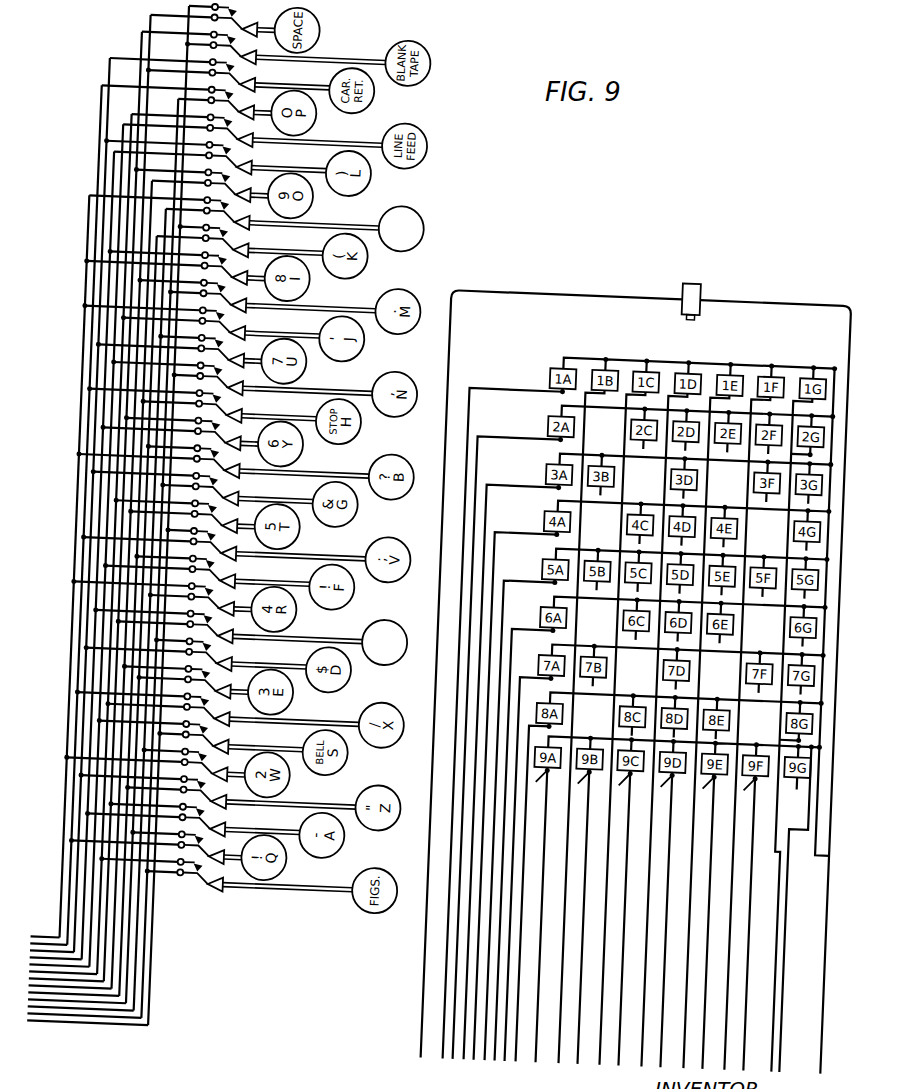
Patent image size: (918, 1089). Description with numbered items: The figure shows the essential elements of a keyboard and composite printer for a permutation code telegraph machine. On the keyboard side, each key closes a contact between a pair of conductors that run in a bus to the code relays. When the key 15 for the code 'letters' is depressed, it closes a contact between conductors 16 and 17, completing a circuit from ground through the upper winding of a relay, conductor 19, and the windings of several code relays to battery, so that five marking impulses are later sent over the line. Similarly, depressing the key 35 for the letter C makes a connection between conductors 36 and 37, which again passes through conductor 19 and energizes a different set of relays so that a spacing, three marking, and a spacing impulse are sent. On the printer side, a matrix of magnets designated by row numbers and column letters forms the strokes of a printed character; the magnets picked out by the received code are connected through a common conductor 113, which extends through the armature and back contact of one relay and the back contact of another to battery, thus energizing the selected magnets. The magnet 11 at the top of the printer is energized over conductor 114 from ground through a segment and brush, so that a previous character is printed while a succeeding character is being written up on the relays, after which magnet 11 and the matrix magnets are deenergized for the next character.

The magnet 11 is at (690, 296).
The key 15 is at (428, 218).
The conductor 16 is at (97, 201).
The conductor 17 is at (173, 211).
The conductor 19 is at (190, 973).
The key 35 is at (419, 618).
The conductor 36 is at (97, 357).
The conductor 37 is at (105, 373).
The common conductor 113 is at (813, 824).
The conductor 114 is at (440, 990).